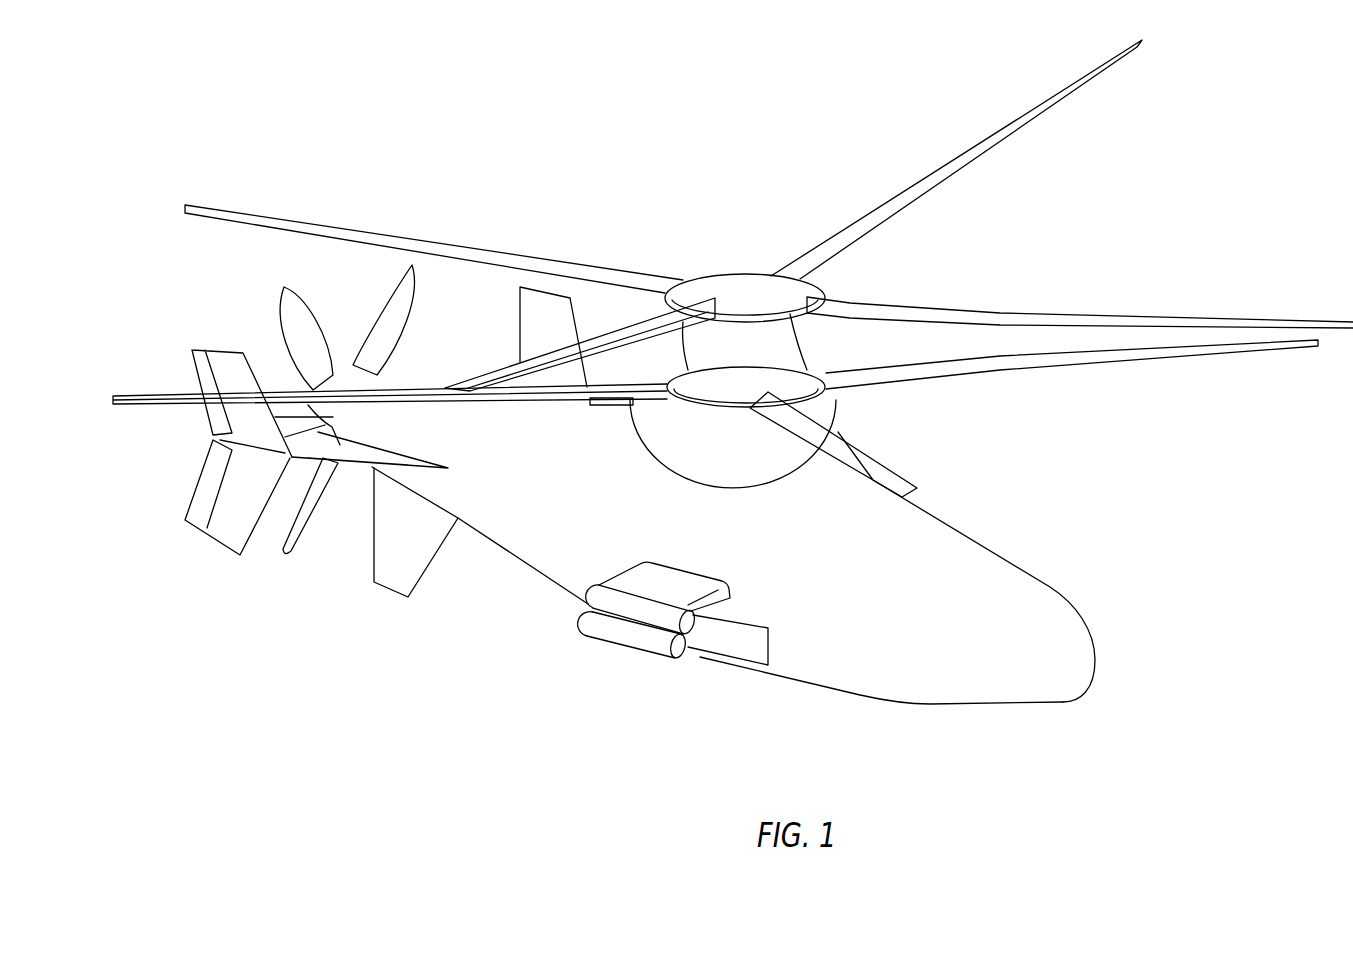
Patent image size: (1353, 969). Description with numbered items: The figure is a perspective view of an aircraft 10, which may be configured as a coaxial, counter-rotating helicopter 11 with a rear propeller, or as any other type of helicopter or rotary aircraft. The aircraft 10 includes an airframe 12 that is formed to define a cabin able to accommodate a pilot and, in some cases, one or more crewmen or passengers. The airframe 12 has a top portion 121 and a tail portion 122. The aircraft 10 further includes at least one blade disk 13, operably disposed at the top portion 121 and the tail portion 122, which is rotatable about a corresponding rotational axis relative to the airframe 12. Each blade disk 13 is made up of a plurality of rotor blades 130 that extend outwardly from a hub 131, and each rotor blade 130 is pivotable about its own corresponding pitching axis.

The aircraft 10 is at (1063, 702).
The coaxial, counter-rotating helicopter 11 is at (1052, 587).
The airframe 12 is at (872, 561).
The top portion 121 is at (669, 460).
The tail portion 122 is at (437, 488).
The blade disk 13 is at (897, 366).
The rotor blade 130 is at (1280, 330).
The hub 131 is at (807, 370).